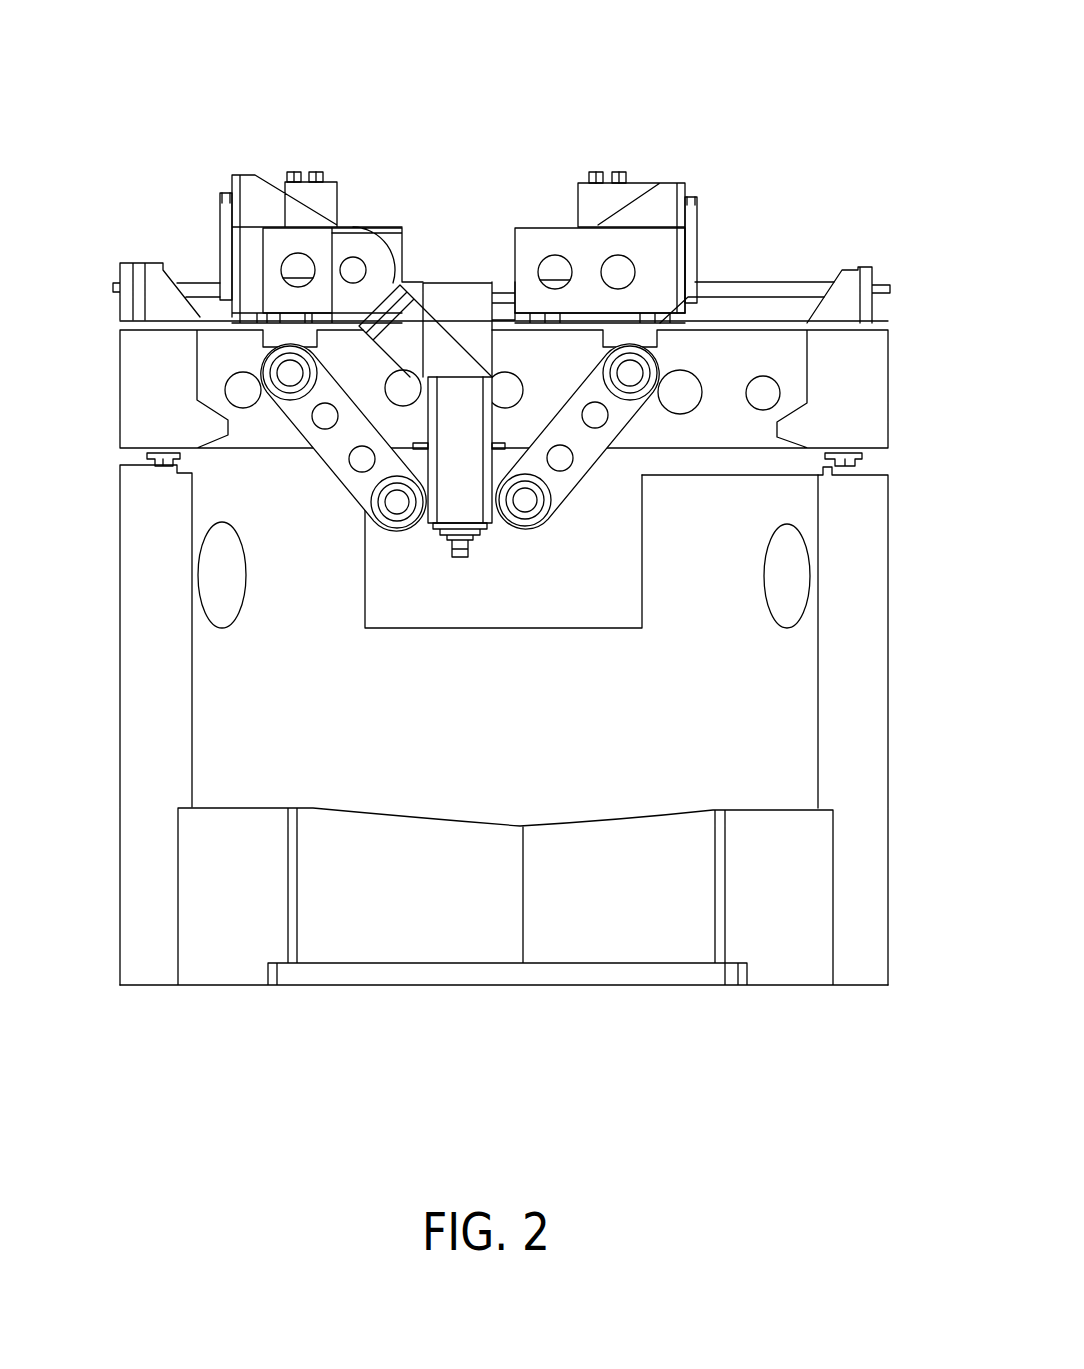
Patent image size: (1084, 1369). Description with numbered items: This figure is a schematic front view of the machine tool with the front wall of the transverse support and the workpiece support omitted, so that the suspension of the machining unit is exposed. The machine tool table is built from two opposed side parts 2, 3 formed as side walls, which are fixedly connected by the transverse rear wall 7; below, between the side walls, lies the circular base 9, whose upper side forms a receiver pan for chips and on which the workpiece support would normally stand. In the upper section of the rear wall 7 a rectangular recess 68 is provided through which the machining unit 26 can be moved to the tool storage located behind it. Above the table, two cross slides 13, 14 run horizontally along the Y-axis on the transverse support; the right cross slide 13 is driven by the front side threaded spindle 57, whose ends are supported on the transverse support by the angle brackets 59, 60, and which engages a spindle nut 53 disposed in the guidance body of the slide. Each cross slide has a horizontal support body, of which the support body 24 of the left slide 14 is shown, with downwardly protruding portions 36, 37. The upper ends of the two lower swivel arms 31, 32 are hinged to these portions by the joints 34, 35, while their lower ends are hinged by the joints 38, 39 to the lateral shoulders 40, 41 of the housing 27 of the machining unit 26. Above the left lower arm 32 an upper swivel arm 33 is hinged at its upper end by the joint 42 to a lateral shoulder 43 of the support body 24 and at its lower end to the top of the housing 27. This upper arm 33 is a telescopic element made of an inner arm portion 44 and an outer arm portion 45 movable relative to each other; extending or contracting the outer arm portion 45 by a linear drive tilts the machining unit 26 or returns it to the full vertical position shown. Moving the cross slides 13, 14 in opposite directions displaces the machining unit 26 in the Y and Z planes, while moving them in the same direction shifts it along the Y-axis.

The side part 2 is at (853, 760).
The side part 3 is at (150, 700).
The transverse rear wall 7 is at (797, 632).
The base 9 is at (236, 950).
The cross slide 13 is at (594, 156).
The cross slide 14 is at (325, 156).
The support body 24 is at (275, 240).
The machining unit 26 is at (481, 565).
The housing 27 is at (458, 505).
The lower swivel arm 31 is at (595, 445).
The lower swivel arm 32 is at (325, 435).
The upper swivel arm 33 is at (440, 300).
The joint 34 is at (630, 373).
The joint 35 is at (290, 373).
The downwardly protruding portion 36 is at (690, 310).
The downwardly protruding portion 37 is at (273, 333).
The joint 38 is at (525, 500).
The joint 39 is at (397, 502).
The lateral shoulder 40 is at (505, 522).
The lateral shoulder 41 is at (425, 520).
The joint 42 is at (358, 262).
The lateral shoulder 43 is at (345, 248).
The inner arm portion 44 is at (400, 257).
The outer arm portion 45 is at (436, 353).
The spindle nut 53 is at (625, 272).
The threaded spindle 57 is at (796, 287).
The angle bracket 59 is at (862, 268).
The angle bracket 60 is at (140, 280).
The rectangular recess 68 is at (623, 600).